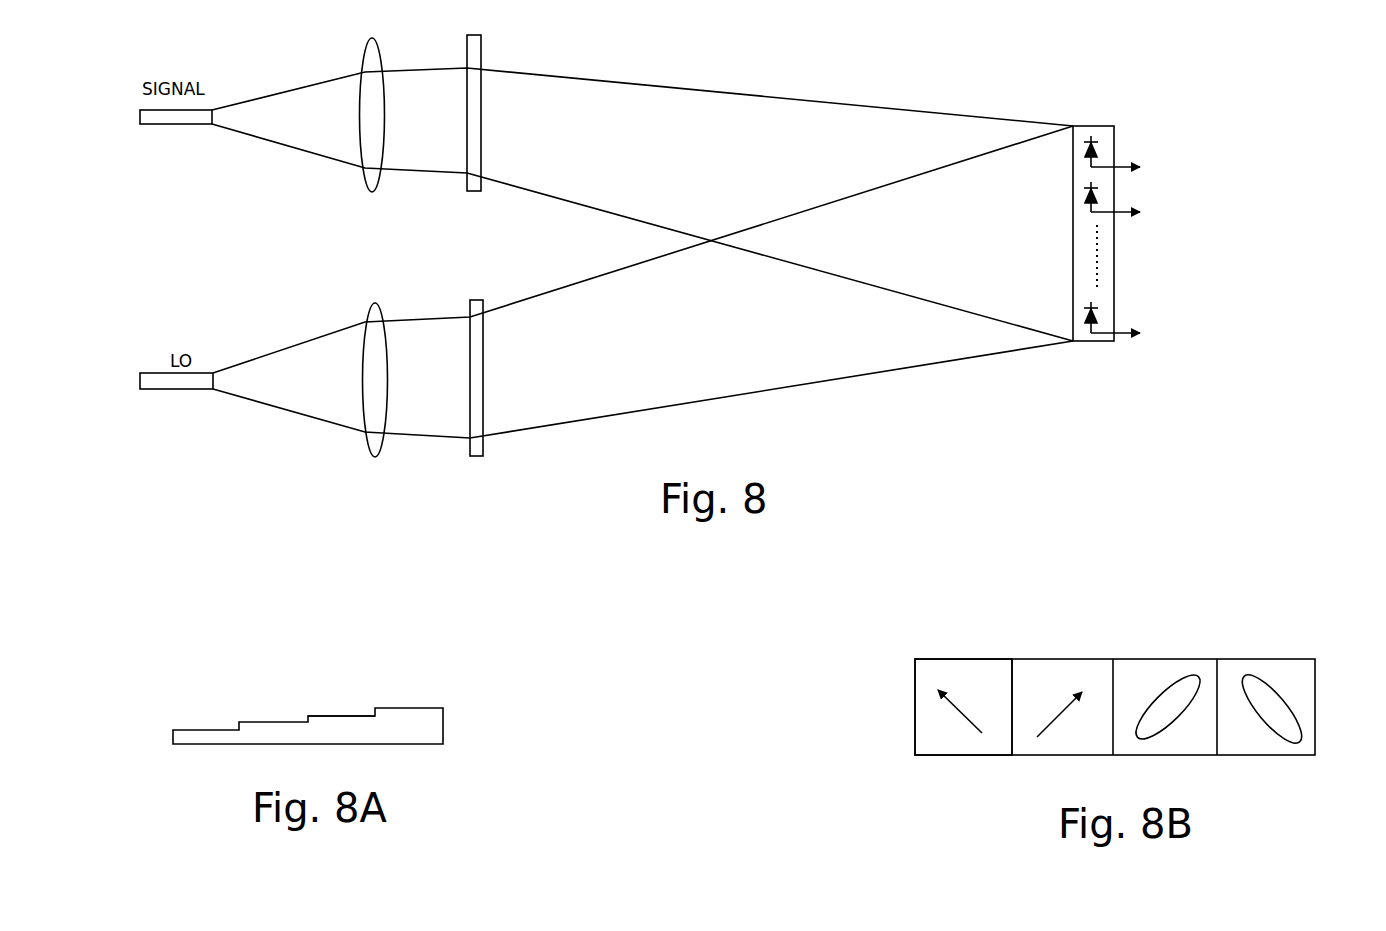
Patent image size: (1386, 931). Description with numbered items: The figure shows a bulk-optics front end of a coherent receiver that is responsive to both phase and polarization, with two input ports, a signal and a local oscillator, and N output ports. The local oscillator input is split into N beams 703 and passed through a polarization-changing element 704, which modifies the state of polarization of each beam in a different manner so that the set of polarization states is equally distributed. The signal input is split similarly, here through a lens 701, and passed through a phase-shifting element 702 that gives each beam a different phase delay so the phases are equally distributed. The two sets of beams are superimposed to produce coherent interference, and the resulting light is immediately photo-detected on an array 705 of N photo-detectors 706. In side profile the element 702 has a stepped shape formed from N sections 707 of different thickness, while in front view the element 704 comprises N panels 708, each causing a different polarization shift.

In FIG. 8, the signal collimating lens 701 is at (377, 42).
In FIG. 8, the phase-shifting element 702 is at (475, 35).
In FIG. 8A, the phase-shifting element 702 is at (438, 731).
In FIG. 8, the N beams 703 is at (389, 293).
In FIG. 8, the polarization-changing element 704 is at (479, 300).
In FIG. 8B, the polarization-changing element 704 is at (1291, 628).
In FIG. 8, the array of photo-detectors 705 is at (1089, 125).
In FIG. 8, the photo-detector 706 is at (1100, 153).
In FIG. 8A, the section 707 is at (342, 725).
In FIG. 8B, the panel 708 is at (965, 756).